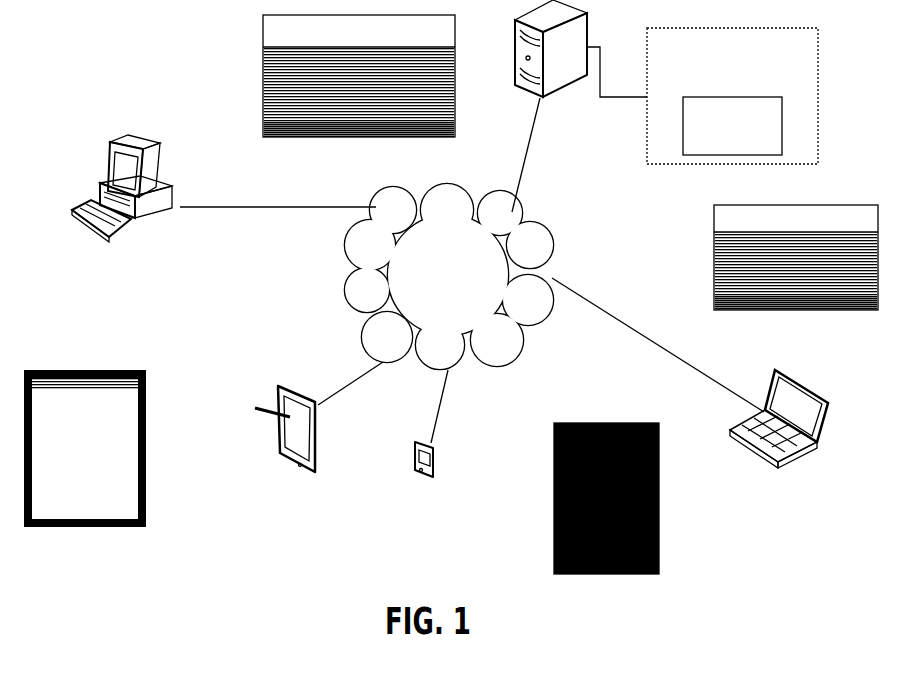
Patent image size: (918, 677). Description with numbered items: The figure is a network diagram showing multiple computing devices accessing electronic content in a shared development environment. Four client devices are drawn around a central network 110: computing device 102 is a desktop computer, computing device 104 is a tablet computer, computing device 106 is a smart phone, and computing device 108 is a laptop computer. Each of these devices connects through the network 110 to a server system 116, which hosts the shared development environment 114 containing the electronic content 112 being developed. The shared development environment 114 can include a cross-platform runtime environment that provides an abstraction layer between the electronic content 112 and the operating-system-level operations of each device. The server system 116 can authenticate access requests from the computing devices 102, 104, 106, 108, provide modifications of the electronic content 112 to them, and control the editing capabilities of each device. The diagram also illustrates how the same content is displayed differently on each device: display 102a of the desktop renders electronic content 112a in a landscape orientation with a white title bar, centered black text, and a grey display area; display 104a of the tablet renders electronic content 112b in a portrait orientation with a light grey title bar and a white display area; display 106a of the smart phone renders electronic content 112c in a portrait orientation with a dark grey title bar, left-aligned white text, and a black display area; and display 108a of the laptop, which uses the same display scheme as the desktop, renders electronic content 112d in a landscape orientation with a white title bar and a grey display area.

The computing device 102 is at (122, 197).
The display 102a is at (123, 165).
The computing device 104 is at (285, 440).
The display 104a is at (290, 438).
The computing device 106 is at (427, 471).
The display 106a is at (428, 460).
The computing device 108 is at (779, 426).
The display 108a is at (800, 408).
The network 110 is at (449, 276).
The electronic content 112 is at (732, 126).
The electronic content 112a is at (283, 87).
The electronic content 112b is at (92, 468).
The electronic content 112c is at (592, 424).
The electronic content 112d is at (748, 262).
The shared development environment 114 is at (732, 96).
The server system 116 is at (581, 60).